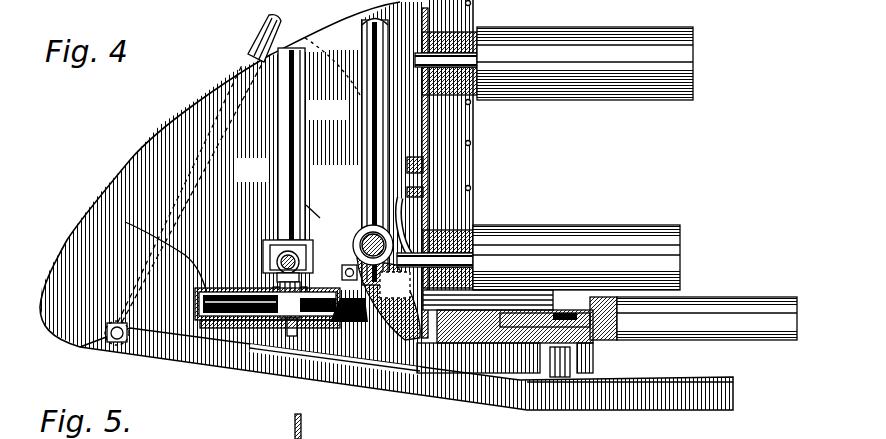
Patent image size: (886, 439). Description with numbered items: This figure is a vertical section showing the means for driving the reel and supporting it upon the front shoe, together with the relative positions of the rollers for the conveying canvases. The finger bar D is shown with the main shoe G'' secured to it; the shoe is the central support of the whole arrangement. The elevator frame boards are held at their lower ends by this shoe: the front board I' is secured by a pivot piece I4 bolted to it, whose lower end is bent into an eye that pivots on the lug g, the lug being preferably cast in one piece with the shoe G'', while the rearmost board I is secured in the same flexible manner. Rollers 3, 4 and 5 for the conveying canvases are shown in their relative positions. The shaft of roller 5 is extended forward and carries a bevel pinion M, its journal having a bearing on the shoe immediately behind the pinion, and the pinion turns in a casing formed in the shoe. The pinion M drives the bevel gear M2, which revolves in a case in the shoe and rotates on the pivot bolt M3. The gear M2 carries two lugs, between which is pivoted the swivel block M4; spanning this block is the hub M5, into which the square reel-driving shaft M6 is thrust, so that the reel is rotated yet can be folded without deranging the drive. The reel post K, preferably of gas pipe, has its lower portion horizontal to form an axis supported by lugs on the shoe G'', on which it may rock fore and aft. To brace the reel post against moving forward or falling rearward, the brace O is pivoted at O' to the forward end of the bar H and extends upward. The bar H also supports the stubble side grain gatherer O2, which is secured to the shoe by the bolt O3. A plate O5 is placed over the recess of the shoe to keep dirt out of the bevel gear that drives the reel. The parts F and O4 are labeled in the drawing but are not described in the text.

In FIG. 4, the brace O is at (273, 31).
In FIG. 4, the pivot O' is at (116, 348).
In FIG. 4, the stubble side grain gatherer O2 is at (218, 117).
In FIG. 4, the bolt O3 is at (346, 262).
In FIG. 4, the link O4 is at (517, 210).
In FIG. 4, the plate O5 is at (125, 222).
In FIG. 4, the bevel pinion M is at (347, 350).
In FIG. 4, the bevel gear M2 is at (228, 292).
In FIG. 4, the pivot bolt M3 is at (277, 330).
In FIG. 4, the swivel block M4 is at (265, 240).
In FIG. 4, the hub M5 is at (318, 213).
In FIG. 4, the reel-driving shaft M6 is at (298, 104).
In FIG. 4, the reel post K is at (385, 80).
In FIG. 4, the front board I' is at (438, 173).
In FIG. 4, the pivot piece I4 is at (425, 163).
In FIG. 4, the pawl lever F is at (405, 258).
In FIG. 4, the lug g is at (410, 230).
In FIG. 4, the bar H is at (310, 365).
In FIG. 4, the main shoe G'' is at (486, 317).
In FIG. 4, the finger bar D is at (593, 355).
In FIG. 4, the roller 3 is at (585, 63).
In FIG. 4, the roller 4 is at (576, 257).
In FIG. 4, the roller 5 is at (648, 318).
In FIG. 5, the rearmost board I is at (283, 426).